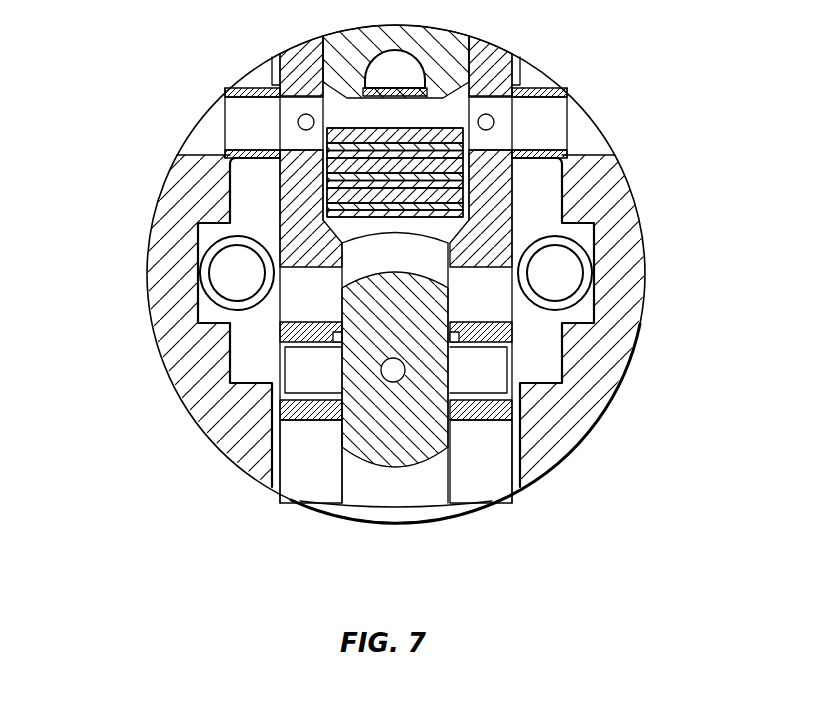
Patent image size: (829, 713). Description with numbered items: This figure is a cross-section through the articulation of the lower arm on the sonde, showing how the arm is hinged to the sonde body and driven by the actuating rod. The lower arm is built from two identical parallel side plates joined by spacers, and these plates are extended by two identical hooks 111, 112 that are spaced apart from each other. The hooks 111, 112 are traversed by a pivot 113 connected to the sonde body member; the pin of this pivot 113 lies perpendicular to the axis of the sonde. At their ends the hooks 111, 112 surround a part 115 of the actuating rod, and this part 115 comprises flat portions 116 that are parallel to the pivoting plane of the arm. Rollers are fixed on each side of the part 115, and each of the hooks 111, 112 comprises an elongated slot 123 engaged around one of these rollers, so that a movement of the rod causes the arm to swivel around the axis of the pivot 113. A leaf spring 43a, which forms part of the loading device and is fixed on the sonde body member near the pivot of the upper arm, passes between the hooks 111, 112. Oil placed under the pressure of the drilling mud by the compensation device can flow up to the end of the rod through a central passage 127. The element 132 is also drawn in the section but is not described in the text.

The leaf spring 43a is at (443, 138).
The pivot 113 is at (550, 125).
The hook 112 is at (297, 208).
The hook 111 is at (497, 220).
The roller bearing 132 is at (593, 268).
The elongated slot 123 is at (293, 478).
The central passage 127 is at (388, 375).
The part of the actuating rod 115 is at (412, 447).
The flat portions 116 is at (450, 432).